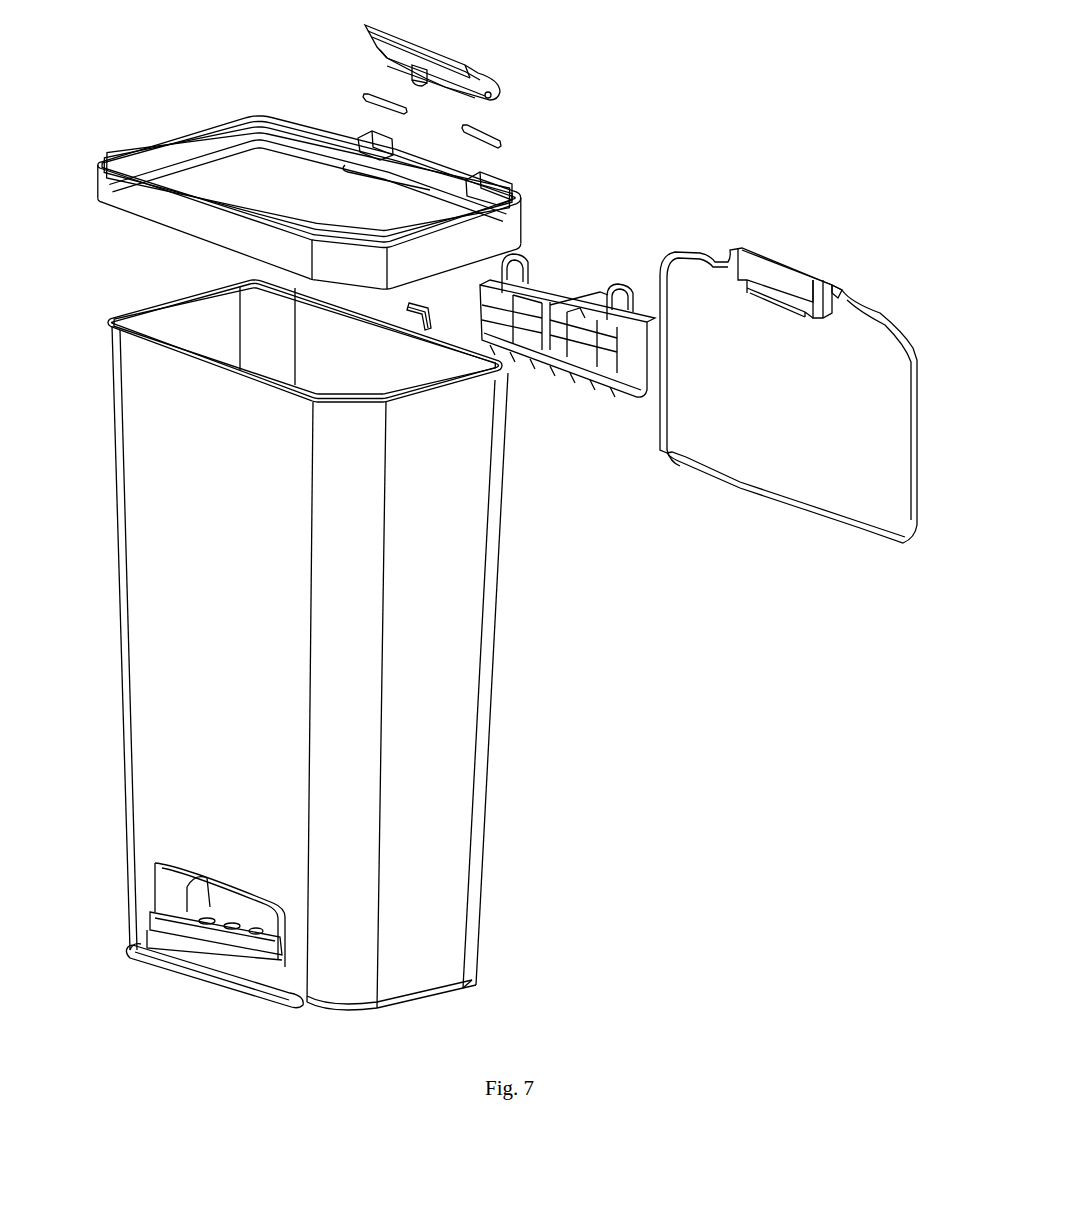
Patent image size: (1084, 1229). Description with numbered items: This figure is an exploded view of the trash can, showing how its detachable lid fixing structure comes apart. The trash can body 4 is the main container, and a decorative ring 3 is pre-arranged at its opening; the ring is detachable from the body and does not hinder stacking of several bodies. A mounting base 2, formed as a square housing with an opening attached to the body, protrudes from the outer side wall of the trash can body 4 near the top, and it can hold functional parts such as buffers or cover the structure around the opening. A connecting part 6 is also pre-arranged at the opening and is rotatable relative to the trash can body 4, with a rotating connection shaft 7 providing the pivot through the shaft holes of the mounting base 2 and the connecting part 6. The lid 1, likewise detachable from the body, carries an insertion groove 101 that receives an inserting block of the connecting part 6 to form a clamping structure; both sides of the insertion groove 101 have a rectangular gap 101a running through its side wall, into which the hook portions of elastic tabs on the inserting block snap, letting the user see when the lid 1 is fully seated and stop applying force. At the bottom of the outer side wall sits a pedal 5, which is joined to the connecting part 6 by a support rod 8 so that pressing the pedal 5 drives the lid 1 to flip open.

The lid 1 is at (870, 352).
The insertion groove 101 is at (753, 268).
The gap 101a is at (838, 290).
The mounting base 2 is at (533, 295).
The decorative ring 3 is at (123, 200).
The trash can body 4 is at (150, 503).
The pedal 5 is at (150, 912).
The connecting part 6 is at (473, 72).
The rotating connection shaft 7 is at (502, 143).
The support rod 8 is at (430, 330).